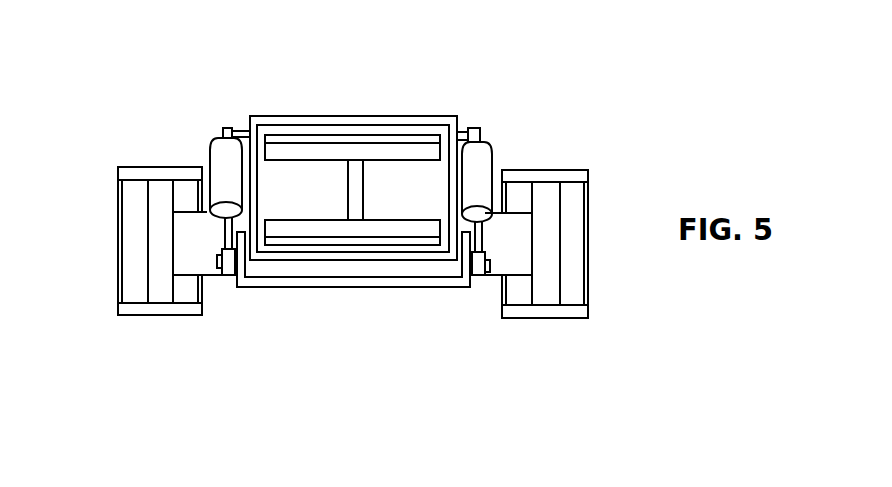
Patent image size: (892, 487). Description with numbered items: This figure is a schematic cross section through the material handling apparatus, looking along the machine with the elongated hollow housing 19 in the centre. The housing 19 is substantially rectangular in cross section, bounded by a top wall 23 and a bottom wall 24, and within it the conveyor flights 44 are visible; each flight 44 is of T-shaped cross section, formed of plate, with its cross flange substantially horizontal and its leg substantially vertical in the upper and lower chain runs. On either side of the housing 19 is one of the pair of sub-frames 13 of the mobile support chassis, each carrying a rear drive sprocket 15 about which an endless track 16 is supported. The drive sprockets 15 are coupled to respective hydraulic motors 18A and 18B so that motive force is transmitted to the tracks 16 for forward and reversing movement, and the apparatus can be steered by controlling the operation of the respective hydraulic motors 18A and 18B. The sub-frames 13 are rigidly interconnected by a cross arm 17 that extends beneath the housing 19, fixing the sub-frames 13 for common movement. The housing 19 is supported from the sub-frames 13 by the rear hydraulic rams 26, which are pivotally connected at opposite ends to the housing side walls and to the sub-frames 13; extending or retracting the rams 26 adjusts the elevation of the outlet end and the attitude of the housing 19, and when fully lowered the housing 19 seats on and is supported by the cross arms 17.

The sub-frame 13 is at (224, 299).
The rear drive sprocket 15 is at (153, 212).
The endless track 16 is at (150, 165).
The cross arm 17 is at (413, 280).
The hydraulic motor 18A is at (525, 248).
The hydraulic motor 18B is at (193, 240).
The elongated hollow housing 19 is at (442, 75).
The top wall 23 is at (283, 121).
The bottom wall 24 is at (351, 258).
The rear hydraulic ram 26 is at (218, 156).
The flight 44 is at (341, 132).